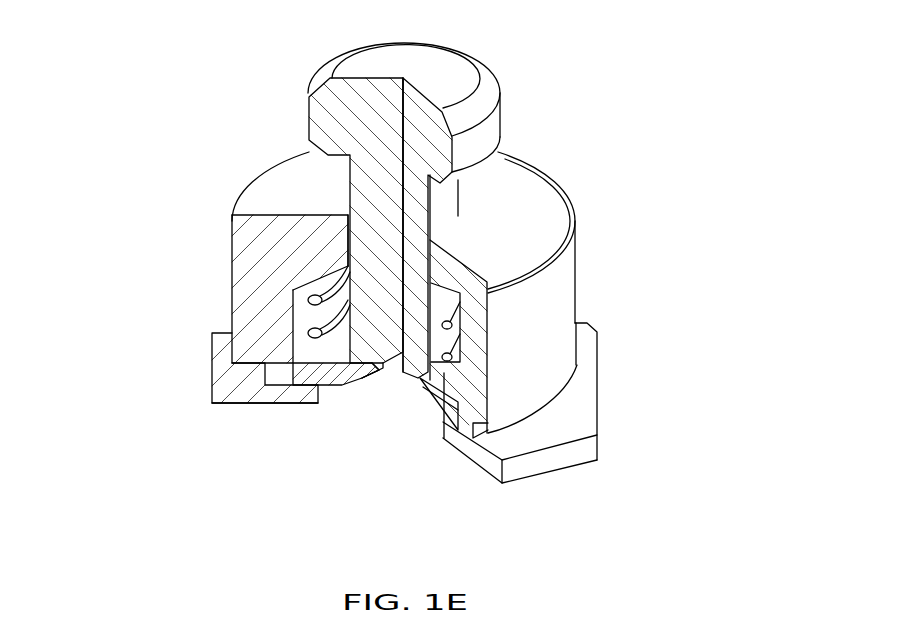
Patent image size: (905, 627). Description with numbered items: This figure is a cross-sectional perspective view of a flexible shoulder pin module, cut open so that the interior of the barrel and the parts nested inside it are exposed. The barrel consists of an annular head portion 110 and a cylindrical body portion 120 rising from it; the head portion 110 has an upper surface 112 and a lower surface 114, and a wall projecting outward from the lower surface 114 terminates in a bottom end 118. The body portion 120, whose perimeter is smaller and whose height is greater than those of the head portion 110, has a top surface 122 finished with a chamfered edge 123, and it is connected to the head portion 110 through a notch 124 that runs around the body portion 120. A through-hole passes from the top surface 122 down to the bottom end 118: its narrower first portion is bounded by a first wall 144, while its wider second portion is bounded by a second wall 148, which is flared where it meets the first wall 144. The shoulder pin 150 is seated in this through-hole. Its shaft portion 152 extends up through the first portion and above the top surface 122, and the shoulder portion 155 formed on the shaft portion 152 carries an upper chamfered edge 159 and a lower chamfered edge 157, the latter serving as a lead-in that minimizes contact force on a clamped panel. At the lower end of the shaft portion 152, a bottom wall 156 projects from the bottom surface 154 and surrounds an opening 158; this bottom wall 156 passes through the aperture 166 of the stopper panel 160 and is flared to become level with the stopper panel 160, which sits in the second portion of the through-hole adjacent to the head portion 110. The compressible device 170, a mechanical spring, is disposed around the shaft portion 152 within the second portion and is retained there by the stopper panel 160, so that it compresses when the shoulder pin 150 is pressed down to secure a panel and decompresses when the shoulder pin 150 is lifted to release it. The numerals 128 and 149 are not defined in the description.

The head portion 110 is at (605, 446).
The upper surface 112 is at (573, 427).
The lower surface 114 is at (483, 472).
The bottom end 118 is at (323, 401).
The body portion 120 is at (578, 274).
The top surface 122 is at (507, 155).
The chamfered edge 123 is at (563, 230).
The notch 124 is at (263, 376).
The housing outer wall 128 is at (575, 213).
The first wall 144 is at (347, 253).
The second wall 148 is at (302, 317).
The spring pocket 149 is at (455, 282).
The shoulder pin 150 is at (322, 52).
The shaft portion 152 is at (313, 230).
The bottom surface 154 is at (290, 355).
The cap section 155 is at (337, 115).
The bottom wall 156 is at (378, 373).
The lower chamfered edge 157 is at (302, 141).
The opening 158 is at (394, 370).
The upper chamfered edge 159 is at (482, 88).
The stopper panel 160 is at (313, 374).
The aperture 166 is at (428, 397).
The compressible device 170 is at (367, 252).